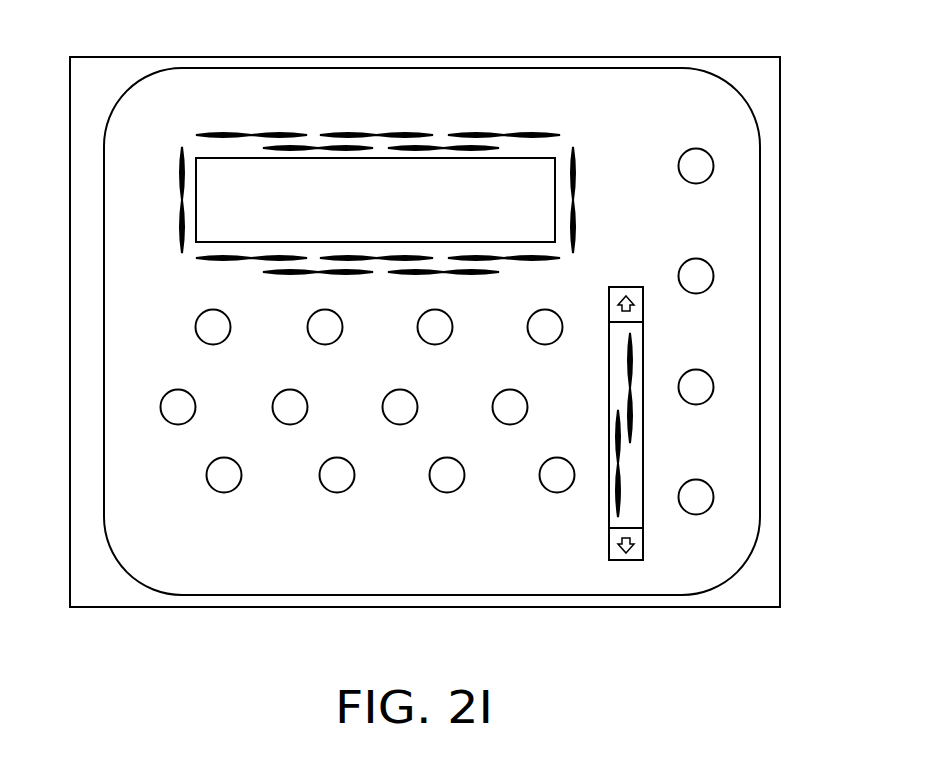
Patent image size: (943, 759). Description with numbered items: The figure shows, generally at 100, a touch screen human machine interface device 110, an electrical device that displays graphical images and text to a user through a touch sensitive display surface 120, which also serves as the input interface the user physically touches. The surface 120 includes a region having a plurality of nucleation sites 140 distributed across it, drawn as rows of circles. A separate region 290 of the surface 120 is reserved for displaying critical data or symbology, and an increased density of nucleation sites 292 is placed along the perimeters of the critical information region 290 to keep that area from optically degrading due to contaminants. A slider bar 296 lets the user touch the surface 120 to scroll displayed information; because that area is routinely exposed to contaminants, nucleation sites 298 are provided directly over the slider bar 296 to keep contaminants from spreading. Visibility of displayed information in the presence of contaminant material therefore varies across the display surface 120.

The touch screen human machine interface device diagram 100 is at (443, 334).
The touch screen human machine interface device 110 is at (810, 125).
The touch sensitive display surface 120 is at (103, 327).
The nucleation sites 140 is at (198, 478).
The critical information region 290 is at (245, 190).
The nucleation sites at perimeter of critical information region 292 is at (530, 118).
The slider bar 296 is at (615, 473).
The nucleation sites over slider bar 298 is at (633, 388).